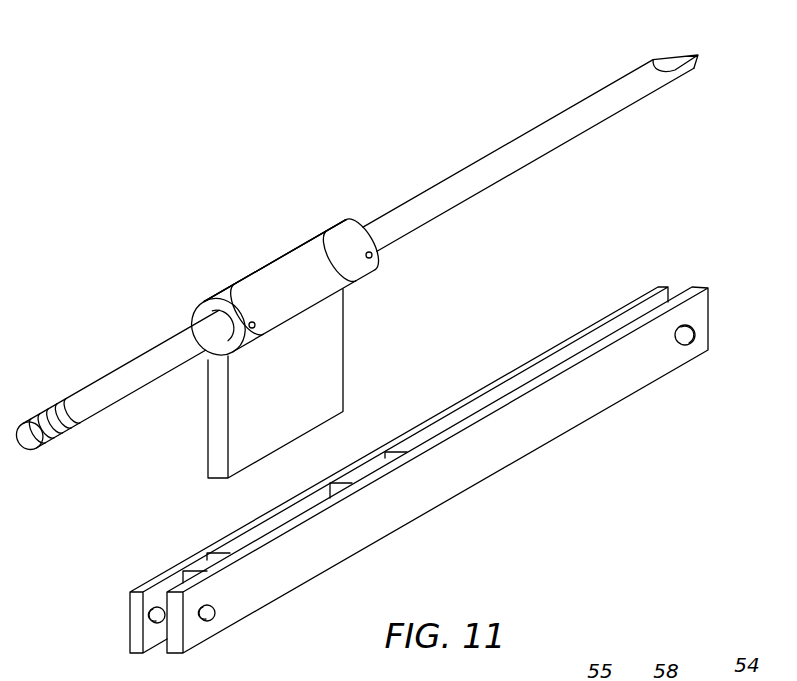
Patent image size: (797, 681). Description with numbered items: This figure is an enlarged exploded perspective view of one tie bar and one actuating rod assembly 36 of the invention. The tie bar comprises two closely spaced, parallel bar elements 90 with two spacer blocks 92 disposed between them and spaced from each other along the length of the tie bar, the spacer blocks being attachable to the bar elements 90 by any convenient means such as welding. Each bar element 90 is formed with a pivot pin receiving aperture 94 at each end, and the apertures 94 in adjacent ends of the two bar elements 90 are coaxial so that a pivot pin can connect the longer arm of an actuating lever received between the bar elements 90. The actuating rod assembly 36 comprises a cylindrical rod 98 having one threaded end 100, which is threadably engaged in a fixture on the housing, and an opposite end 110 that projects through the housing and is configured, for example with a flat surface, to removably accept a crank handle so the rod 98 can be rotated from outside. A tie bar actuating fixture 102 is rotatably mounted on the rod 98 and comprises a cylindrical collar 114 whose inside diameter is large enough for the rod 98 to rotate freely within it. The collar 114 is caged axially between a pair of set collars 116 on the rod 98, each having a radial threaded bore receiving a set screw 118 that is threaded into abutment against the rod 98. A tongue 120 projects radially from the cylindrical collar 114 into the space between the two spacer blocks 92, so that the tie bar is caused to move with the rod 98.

The actuating rod assembly 36 is at (225, 225).
The bar elements 90 is at (514, 367).
The spacer blocks 92 is at (367, 467).
The pivot pin receiving apertures 94 is at (690, 338).
The cylindrical rod 98 is at (486, 158).
The threaded end 100 is at (43, 413).
The tie bar actuating fixture 102 is at (322, 228).
The end of the cylindrical rod 110 is at (675, 58).
The cylindrical collar 114 is at (281, 273).
The set collars 116 is at (204, 298).
The set screw 118 is at (372, 258).
The tongue 120 is at (336, 338).